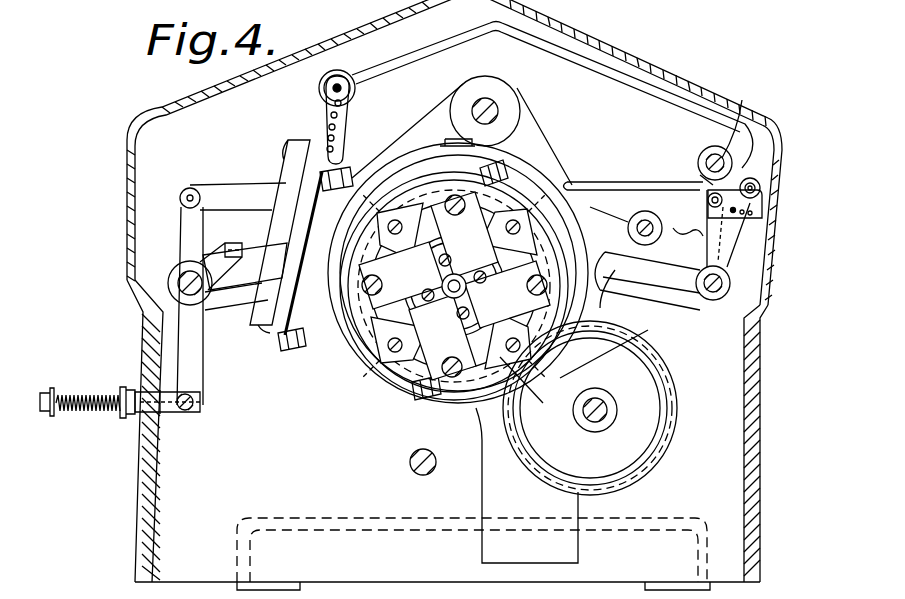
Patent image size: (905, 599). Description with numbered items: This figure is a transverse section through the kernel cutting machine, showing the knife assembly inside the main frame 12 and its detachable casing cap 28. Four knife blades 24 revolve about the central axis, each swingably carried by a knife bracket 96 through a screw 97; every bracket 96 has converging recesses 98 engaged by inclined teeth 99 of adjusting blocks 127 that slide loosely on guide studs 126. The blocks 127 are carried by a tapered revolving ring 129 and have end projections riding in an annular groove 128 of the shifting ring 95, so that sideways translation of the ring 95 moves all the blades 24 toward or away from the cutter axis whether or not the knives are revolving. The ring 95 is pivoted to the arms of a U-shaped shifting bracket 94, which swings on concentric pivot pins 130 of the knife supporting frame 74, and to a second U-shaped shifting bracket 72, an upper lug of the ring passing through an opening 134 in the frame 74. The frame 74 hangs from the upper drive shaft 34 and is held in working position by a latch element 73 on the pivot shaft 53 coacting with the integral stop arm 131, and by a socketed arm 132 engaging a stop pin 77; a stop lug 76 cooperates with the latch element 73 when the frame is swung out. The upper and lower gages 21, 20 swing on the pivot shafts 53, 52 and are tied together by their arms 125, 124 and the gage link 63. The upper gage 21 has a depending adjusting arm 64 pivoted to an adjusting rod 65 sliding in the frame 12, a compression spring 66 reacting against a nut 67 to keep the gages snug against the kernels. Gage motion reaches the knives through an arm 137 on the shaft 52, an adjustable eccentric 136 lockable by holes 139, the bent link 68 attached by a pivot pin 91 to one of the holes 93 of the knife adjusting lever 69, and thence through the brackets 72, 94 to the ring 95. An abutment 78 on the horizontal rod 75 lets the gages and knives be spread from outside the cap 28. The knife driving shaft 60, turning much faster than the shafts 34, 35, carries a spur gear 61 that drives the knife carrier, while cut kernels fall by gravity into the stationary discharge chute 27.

The casing cap 28 is at (127, 153).
The main frame 12 is at (152, 488).
The bent link 68 is at (616, 80).
The knife supporting frame 74 is at (530, 139).
The upper drive shaft 34 is at (487, 105).
The opening 134 is at (446, 146).
The pivot pin 91 is at (326, 90).
The holes 93 is at (341, 125).
The pivot pins 130 is at (333, 172).
The knife adjusting lever 69 is at (300, 142).
The upper gage 21 is at (235, 297).
The arm 125 is at (190, 224).
The adjusting arm 64 is at (205, 380).
The pivot shaft 53 is at (176, 280).
The latch element 73 is at (250, 236).
The stop arm 131 is at (248, 266).
The second U-shaped shifting bracket 72 is at (258, 328).
The nut 67 is at (46, 390).
The compression spring 66 is at (100, 412).
The adjusting rod 65 is at (168, 414).
The U-shaped shifting bracket 94 is at (330, 370).
The shifting ring 95 is at (326, 300).
The annular groove 128 is at (352, 388).
The inclined teeth 99 is at (357, 234).
The guide studs 126 is at (386, 355).
The screw 97 is at (464, 234).
The knife blades 24 is at (478, 298).
The knife bracket 96 is at (442, 337).
The recesses 98 is at (412, 275).
The tapered ring 129 is at (452, 402).
The adjusting blocks 127 is at (541, 394).
The gage link 63 is at (622, 170).
The socketed arm 132 is at (630, 230).
The stop pin 77 is at (650, 243).
The gage arm 124 is at (691, 228).
The lower gage 20 is at (648, 292).
The pivot shaft 52 is at (716, 302).
The arm 137 is at (740, 232).
The holes 139 is at (708, 198).
The eccentric 136 is at (712, 186).
The horizontal rod 75 is at (702, 166).
The abutment 78 is at (747, 116).
The stop lug 76 is at (612, 342).
The knife driving shaft 60 is at (608, 418).
The spur gear 61 is at (650, 460).
The discharge chute 27 is at (498, 503).
The shaft 35 is at (410, 466).